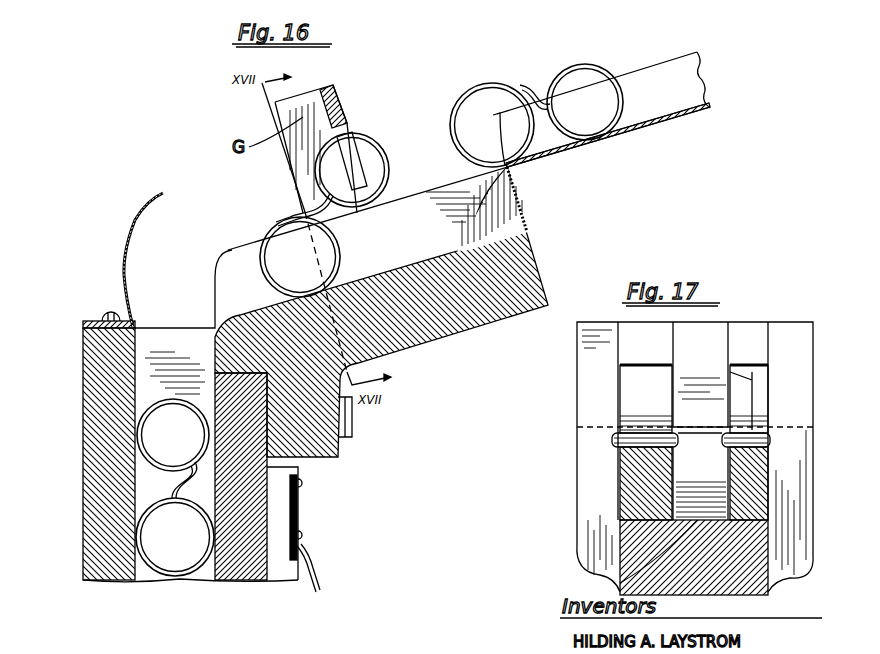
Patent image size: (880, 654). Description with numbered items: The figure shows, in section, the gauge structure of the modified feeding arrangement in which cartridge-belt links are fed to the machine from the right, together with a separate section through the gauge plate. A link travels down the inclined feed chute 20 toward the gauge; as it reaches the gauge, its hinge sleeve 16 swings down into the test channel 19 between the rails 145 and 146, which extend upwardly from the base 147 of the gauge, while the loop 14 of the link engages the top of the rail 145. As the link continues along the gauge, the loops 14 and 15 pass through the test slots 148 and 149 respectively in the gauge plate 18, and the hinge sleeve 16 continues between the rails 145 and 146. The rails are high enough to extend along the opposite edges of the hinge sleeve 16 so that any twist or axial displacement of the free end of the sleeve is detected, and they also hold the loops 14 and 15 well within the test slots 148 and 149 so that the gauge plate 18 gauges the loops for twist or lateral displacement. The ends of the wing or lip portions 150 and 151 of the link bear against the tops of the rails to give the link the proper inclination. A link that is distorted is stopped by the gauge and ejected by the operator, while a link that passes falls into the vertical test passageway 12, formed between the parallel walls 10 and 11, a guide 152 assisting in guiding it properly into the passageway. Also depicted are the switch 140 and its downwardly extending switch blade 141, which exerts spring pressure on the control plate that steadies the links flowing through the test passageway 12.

In FIG. 16, the wall 10 is at (95, 486).
In FIG. 16, the wall 11 is at (245, 578).
In FIG. 16, the test passageway 12 is at (173, 350).
In FIG. 16, the loop 14 is at (583, 63).
In FIG. 17, the loop 14 is at (638, 393).
In FIG. 16, the loop 15 is at (372, 165).
In FIG. 17, the loop 15 is at (742, 400).
In FIG. 16, the hinge sleeve 16 is at (455, 128).
In FIG. 17, the hinge sleeve 16 is at (690, 472).
In FIG. 16, the gauge plate 18 is at (337, 102).
In FIG. 17, the gauge plate 18 is at (747, 333).
In FIG. 17, the test channel 19 is at (617, 582).
In FIG. 16, the feed chute 20 is at (690, 112).
In FIG. 16, the switch 140 is at (289, 580).
In FIG. 16, the switch blade 141 is at (313, 574).
In FIG. 16, the rail 145 is at (420, 207).
In FIG. 17, the rail 145 is at (670, 493).
In FIG. 17, the rail 146 is at (783, 567).
In FIG. 16, the base 147 is at (473, 313).
In FIG. 17, the base 147 is at (640, 550).
In FIG. 16, the test slot 148 is at (343, 130).
In FIG. 17, the test slot 148 is at (652, 368).
In FIG. 17, the test slot 149 is at (753, 372).
In FIG. 16, the lip portion 150 is at (290, 216).
In FIG. 17, the lip portion 150 is at (637, 438).
In FIG. 16, the lip portion 151 is at (165, 497).
In FIG. 17, the lip portion 151 is at (767, 438).
In FIG. 16, the guide 152 is at (124, 248).